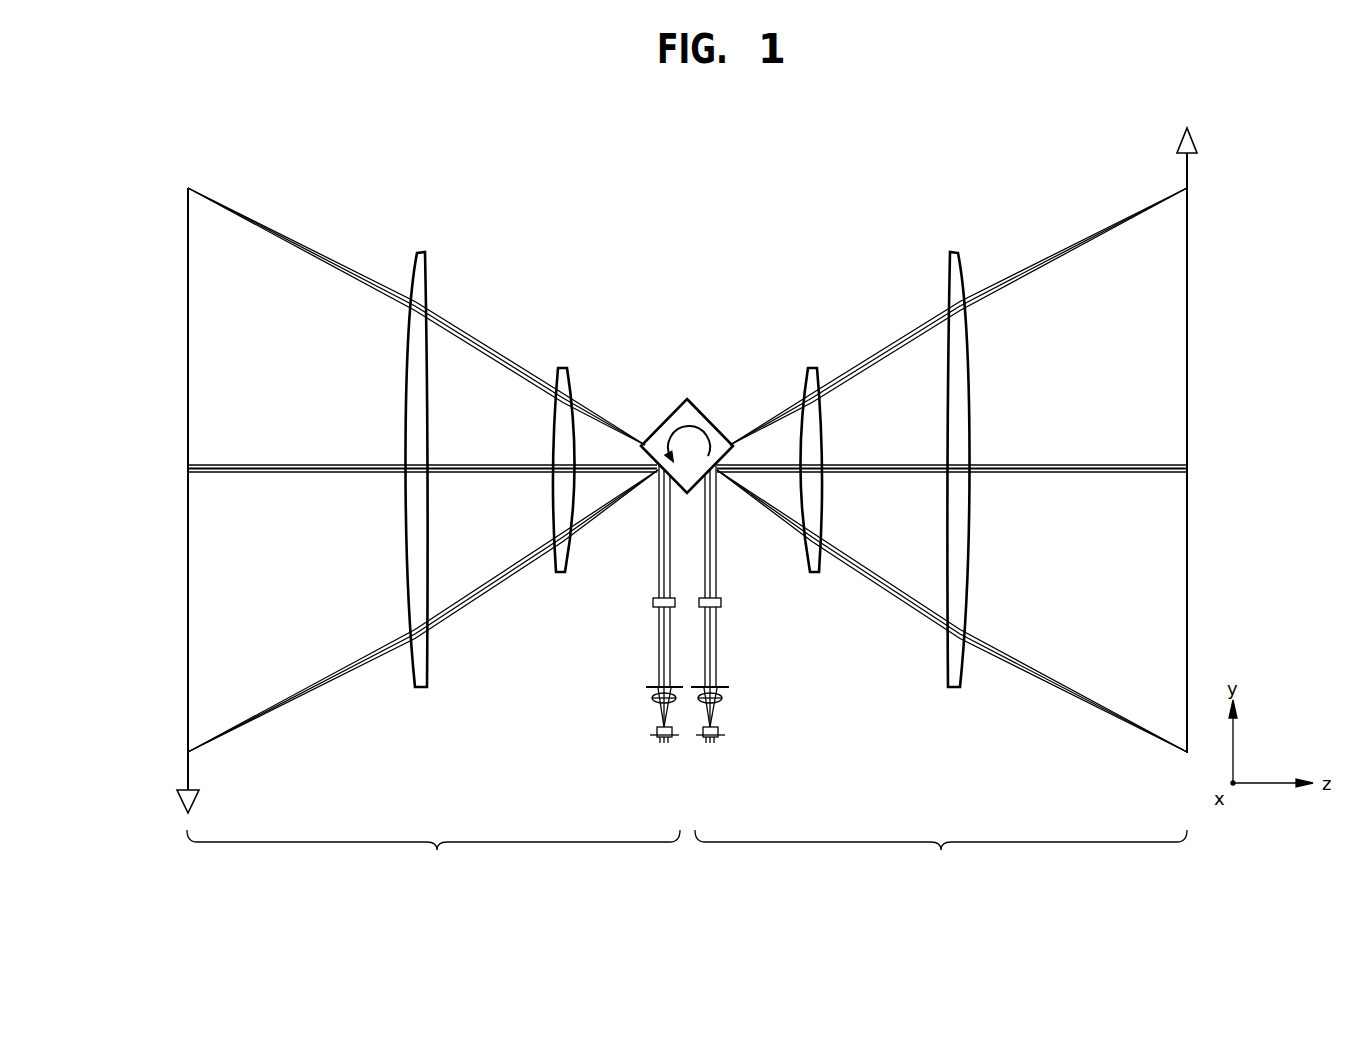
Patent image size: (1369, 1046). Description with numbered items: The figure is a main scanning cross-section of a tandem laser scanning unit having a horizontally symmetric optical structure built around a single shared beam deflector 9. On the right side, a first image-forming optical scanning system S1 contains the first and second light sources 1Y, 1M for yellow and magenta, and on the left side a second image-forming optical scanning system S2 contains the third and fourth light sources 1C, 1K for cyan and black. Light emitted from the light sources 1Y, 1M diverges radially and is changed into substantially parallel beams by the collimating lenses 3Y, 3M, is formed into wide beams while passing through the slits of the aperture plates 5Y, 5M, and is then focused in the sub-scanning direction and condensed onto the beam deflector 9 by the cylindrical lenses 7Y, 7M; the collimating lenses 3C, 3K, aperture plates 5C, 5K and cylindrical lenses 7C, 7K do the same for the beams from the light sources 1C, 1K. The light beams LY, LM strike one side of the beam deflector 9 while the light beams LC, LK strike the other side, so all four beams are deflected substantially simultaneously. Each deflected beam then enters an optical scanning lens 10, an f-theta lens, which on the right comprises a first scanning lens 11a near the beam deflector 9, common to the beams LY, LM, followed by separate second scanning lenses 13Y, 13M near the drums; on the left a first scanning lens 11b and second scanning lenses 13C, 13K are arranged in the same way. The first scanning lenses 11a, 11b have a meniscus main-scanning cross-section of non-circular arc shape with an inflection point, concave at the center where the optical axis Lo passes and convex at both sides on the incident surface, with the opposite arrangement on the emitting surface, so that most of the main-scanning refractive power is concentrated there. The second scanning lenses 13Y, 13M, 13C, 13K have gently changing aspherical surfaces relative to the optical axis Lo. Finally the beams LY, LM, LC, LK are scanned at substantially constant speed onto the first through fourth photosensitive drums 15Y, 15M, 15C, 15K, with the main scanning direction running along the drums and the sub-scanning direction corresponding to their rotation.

The third light source 1C is at (618, 739).
The fourth light source 1K is at (650, 735).
The first light source 1Y is at (756, 739).
The second light source 1M is at (725, 735).
The collimating lens 3C is at (616, 707).
The collimating lens 3K is at (652, 700).
The collimating lens 3Y is at (757, 707).
The collimating lens 3M is at (722, 700).
The aperture plate 5C is at (620, 681).
The aperture plate 5K is at (646, 687).
The aperture plate 5Y is at (754, 681).
The aperture plate 5M is at (729, 687).
The cylindrical lens 7C is at (618, 603).
The cylindrical lens 7K is at (653, 603).
The cylindrical lens 7Y is at (757, 603).
The cylindrical lens 7M is at (721, 603).
The beam deflector 9 is at (697, 405).
The optical scanning lens 10 is at (688, 404).
The first scanning lens 11a is at (812, 367).
The first scanning lens 11b is at (563, 367).
The second scanning lens 13C is at (438, 439).
The second scanning lens 13K is at (422, 252).
The second scanning lens 13Y is at (938, 439).
The second scanning lens 13M is at (950, 252).
The third photosensitive drum 15C is at (137, 500).
The fourth photosensitive drum 15K is at (188, 260).
The first photosensitive drum 15Y is at (1238, 440).
The second photosensitive drum 15M is at (1187, 260).
The light beam LC is at (423, 470).
The light beam LK is at (470, 602).
The light beam LY is at (952, 470).
The light beam LM is at (905, 602).
The optical axis Lo is at (1085, 468).
The first image-forming optical scanning system S1 is at (941, 858).
The second image-forming optical scanning system S2 is at (433, 858).